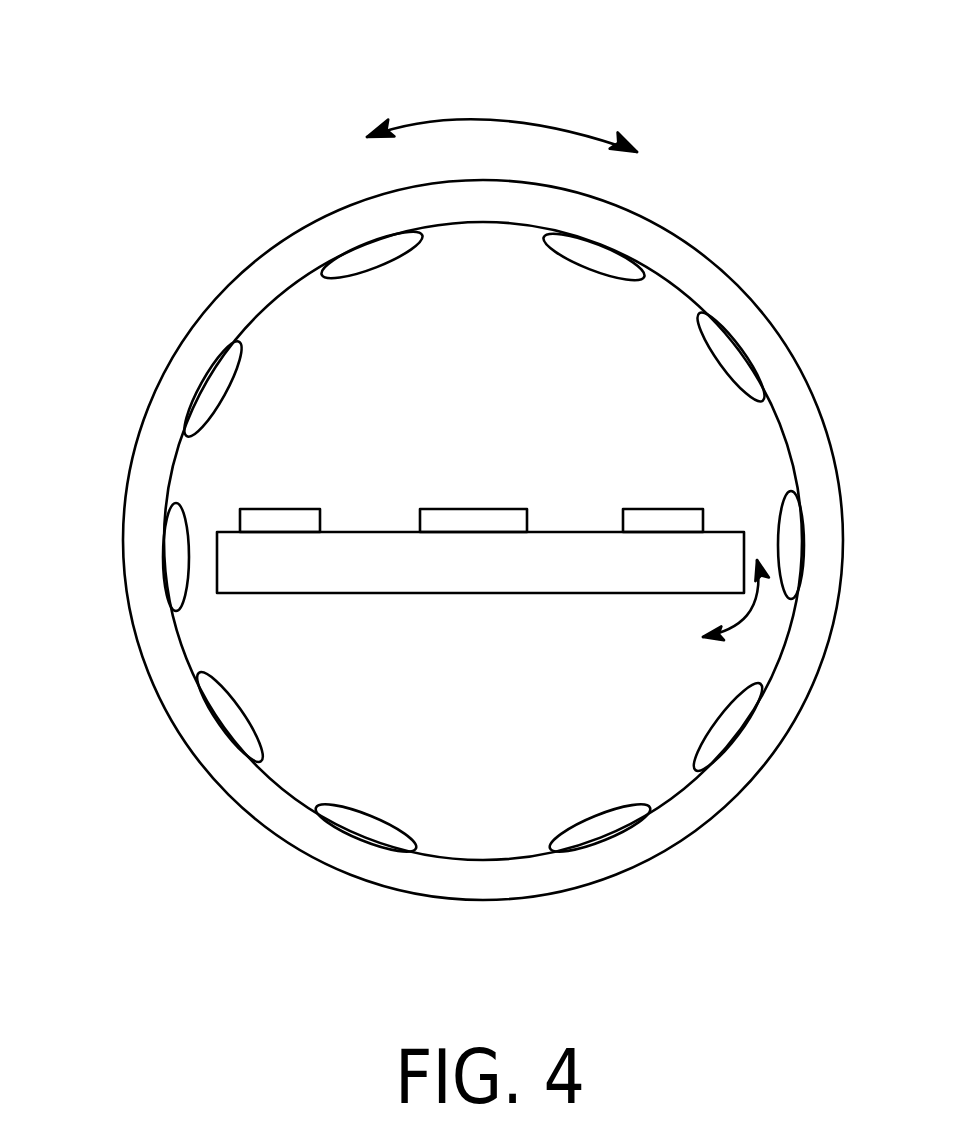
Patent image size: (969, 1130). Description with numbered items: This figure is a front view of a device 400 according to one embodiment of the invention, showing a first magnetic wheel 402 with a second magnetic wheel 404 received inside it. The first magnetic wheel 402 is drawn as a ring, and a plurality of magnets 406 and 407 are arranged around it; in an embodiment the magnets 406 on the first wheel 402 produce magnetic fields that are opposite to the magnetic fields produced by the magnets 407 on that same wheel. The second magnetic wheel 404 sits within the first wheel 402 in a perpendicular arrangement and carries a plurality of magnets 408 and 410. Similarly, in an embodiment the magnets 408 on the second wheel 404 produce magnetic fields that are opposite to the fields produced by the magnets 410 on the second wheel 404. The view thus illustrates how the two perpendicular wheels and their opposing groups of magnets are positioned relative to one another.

The projection screen assembly 400 is at (713, 112).
The first magnetic wheel 402 is at (126, 455).
The second magnetic wheel 404 is at (475, 594).
The magnets 406 is at (612, 247).
The magnets 407 is at (365, 243).
The magnets 408 is at (268, 506).
The magnets 410 is at (447, 506).